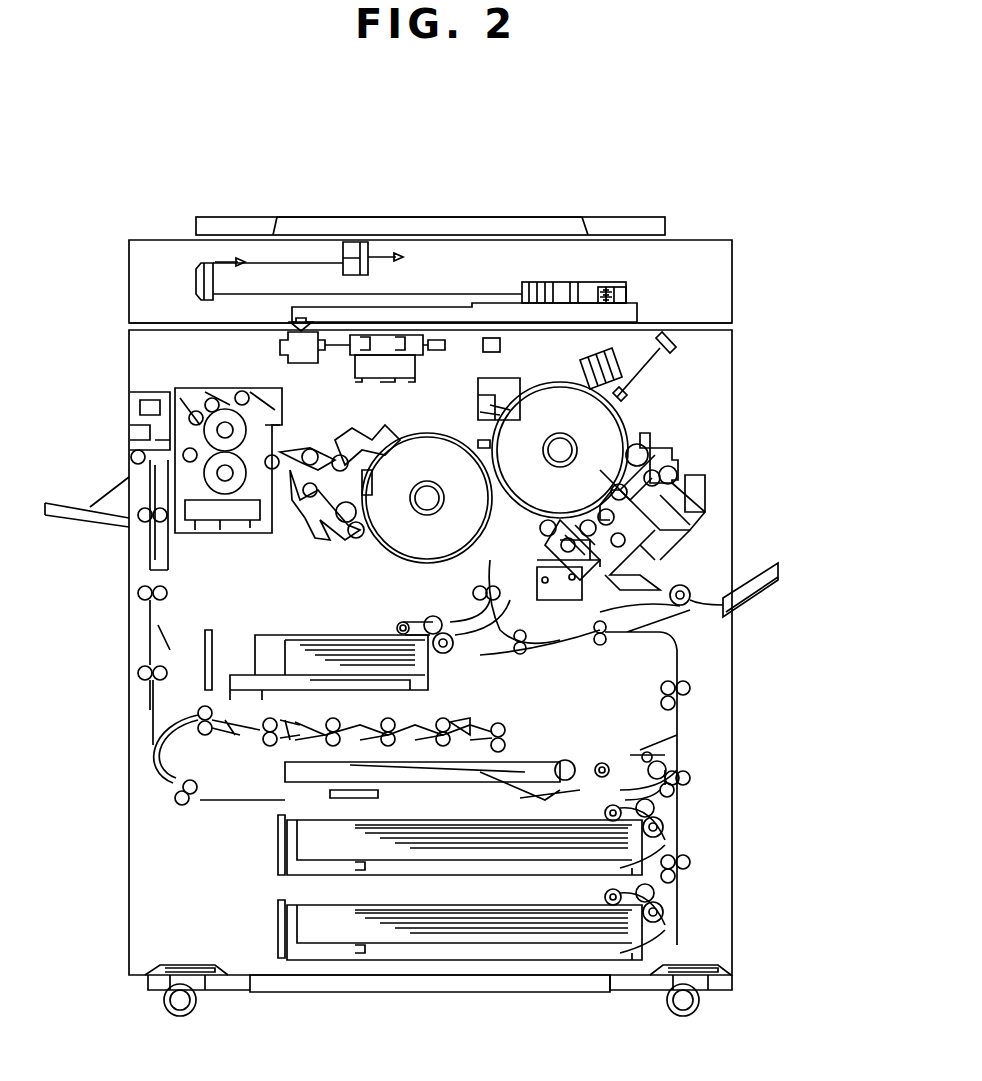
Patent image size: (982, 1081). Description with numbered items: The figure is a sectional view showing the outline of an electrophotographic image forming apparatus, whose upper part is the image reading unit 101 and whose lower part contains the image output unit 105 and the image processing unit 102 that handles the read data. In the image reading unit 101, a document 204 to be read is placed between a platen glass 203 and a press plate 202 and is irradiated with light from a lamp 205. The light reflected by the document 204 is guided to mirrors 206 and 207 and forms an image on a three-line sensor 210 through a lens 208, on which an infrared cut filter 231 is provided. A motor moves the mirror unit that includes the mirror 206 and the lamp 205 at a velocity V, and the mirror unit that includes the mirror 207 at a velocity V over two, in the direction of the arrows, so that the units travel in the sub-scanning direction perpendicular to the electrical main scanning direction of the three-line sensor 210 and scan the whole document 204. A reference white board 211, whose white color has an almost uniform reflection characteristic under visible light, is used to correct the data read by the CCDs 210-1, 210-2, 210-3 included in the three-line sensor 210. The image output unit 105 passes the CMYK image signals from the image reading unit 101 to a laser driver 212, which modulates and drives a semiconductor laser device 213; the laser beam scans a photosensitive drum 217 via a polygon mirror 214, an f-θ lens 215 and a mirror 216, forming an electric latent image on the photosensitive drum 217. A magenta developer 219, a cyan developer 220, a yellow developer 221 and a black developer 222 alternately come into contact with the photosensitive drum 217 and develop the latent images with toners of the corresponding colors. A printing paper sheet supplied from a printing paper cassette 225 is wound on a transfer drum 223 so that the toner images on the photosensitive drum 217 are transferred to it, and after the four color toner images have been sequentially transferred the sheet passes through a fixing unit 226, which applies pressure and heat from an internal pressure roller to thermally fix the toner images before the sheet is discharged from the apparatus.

The image reading unit 101 is at (732, 290).
The image processing unit 102 is at (645, 312).
The image output unit 105 is at (732, 525).
The press plate 202 is at (493, 217).
The platen glass 203 is at (565, 240).
The document 204 is at (445, 217).
The lamp 205 is at (348, 255).
The mirror 206 is at (365, 260).
The mirror 207 is at (197, 292).
The lens 208 is at (603, 287).
The 3-line sensor 210 is at (627, 290).
The CCD 210-1 is at (630, 288).
The CCD 210-2 is at (630, 293).
The CCD 210-3 is at (630, 298).
The reference white board 211 is at (240, 240).
The laser driver 212 is at (280, 352).
The semiconductor laser device 213 is at (322, 356).
The polygon mirror 214 is at (415, 352).
The f-θ lens 215 is at (500, 358).
The mirror 216 is at (672, 352).
The photosensitive drum 217 is at (628, 428).
The magenta developer 219 is at (590, 545).
The cyan developer 220 is at (648, 456).
The yellow developer 221 is at (648, 455).
The black developer 222 is at (528, 545).
The transfer drum 223 is at (392, 562).
The printing paper cassette 225 is at (618, 953).
The fixing unit 226 is at (222, 535).
The infrared cut filter 231 is at (527, 282).